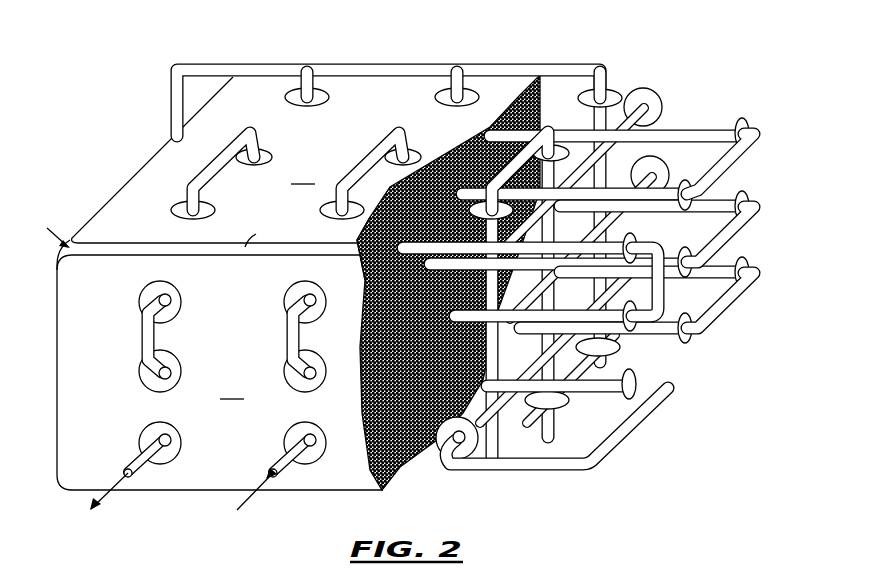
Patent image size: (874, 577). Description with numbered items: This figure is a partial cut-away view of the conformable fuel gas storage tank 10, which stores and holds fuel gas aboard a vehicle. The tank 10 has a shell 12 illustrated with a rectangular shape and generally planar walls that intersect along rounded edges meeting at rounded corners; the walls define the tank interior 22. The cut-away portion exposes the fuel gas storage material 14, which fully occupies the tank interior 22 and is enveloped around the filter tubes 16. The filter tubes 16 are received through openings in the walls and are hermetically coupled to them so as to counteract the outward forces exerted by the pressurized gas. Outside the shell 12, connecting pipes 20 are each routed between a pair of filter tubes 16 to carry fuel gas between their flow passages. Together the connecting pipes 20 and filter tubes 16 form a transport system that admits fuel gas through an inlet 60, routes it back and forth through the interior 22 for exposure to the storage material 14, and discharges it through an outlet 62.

The conformable fuel gas storage tank 10 is at (93, 171).
The shell 12 is at (357, 60).
The fuel gas storage material 14 is at (469, 145).
The filter tubes 16 is at (628, 180).
The connecting pipes 20 is at (262, 82).
The tank interior 22 is at (422, 294).
The inlet 60 is at (315, 463).
The outlet 62 is at (173, 457).